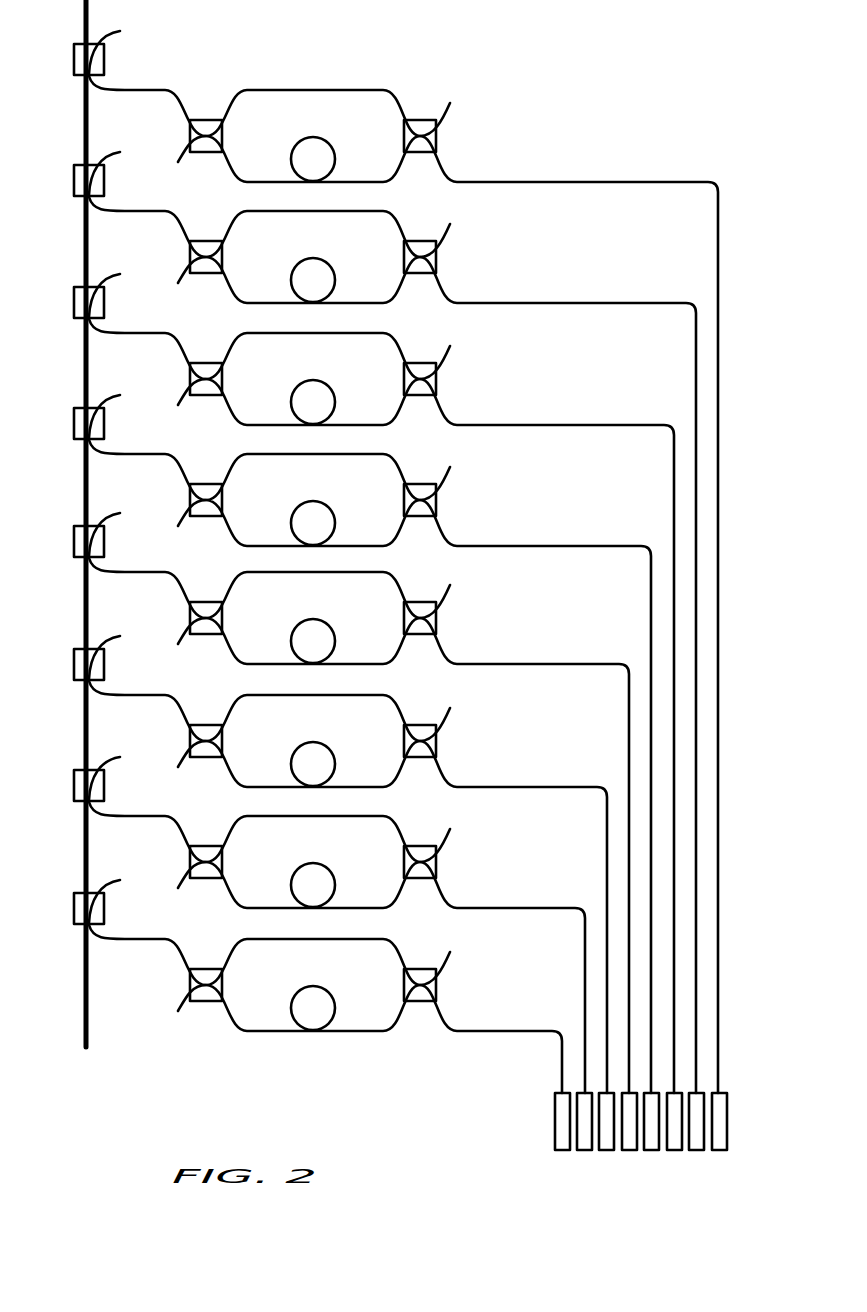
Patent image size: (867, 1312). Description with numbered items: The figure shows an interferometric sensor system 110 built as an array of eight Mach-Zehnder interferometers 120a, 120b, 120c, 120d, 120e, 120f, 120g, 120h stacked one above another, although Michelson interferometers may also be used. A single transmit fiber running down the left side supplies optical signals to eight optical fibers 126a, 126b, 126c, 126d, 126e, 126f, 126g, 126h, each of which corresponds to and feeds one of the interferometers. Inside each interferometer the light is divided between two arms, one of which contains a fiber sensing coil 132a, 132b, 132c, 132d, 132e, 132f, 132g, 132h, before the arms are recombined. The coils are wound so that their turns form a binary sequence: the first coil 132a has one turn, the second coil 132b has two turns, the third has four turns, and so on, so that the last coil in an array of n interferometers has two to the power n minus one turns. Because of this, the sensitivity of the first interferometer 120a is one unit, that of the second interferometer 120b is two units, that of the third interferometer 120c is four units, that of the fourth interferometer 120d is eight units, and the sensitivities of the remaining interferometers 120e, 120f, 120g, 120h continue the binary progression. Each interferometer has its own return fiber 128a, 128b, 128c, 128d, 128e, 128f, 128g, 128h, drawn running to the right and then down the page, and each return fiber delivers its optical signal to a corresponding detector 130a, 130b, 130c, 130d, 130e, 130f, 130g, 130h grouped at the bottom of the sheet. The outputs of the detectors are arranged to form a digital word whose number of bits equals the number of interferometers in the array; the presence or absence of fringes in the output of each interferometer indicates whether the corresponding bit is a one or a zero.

The sensor system 110 is at (160, 1072).
The first interferometer 120a is at (492, 970).
The second interferometer 120b is at (492, 847).
The third interferometer 120c is at (492, 726).
The fourth interferometer 120d is at (492, 603).
The interferometer 120e is at (492, 485).
The interferometer 120f is at (492, 364).
The interferometer 120g is at (492, 242).
The interferometer 120h is at (492, 121).
The optical fiber 126a is at (158, 938).
The optical fiber 126b is at (158, 815).
The optical fiber 126c is at (158, 694).
The optical fiber 126d is at (158, 571).
The optical fiber 126e is at (158, 453).
The optical fiber 126f is at (158, 332).
The optical fiber 126g is at (158, 210).
The optical fiber 126h is at (158, 89).
The return fiber 128a is at (555, 1105).
The return fiber 128b is at (585, 1152).
The return fiber 128c is at (607, 1152).
The return fiber 128d is at (629, 1152).
The return fiber 128e is at (651, 1152).
The return fiber 128f is at (674, 1152).
The return fiber 128g is at (697, 1152).
The return fiber 128h is at (727, 1103).
The detector 130a is at (497, 1031).
The detector 130b is at (519, 908).
The detector 130c is at (540, 787).
The detector 130d is at (560, 664).
The detector 130e is at (589, 546).
The detector 130f is at (599, 425).
The detector 130g is at (599, 303).
The detector 130h is at (595, 182).
The fiber sensing coil 132a is at (326, 971).
The fiber sensing coil 132b is at (326, 848).
The fiber sensing coil 132c is at (326, 727).
The fiber sensing coil 132d is at (326, 604).
The fiber sensing coil 132e is at (326, 486).
The fiber sensing coil 132f is at (326, 365).
The fiber sensing coil 132g is at (326, 243).
The fiber sensing coil 132h is at (326, 122).